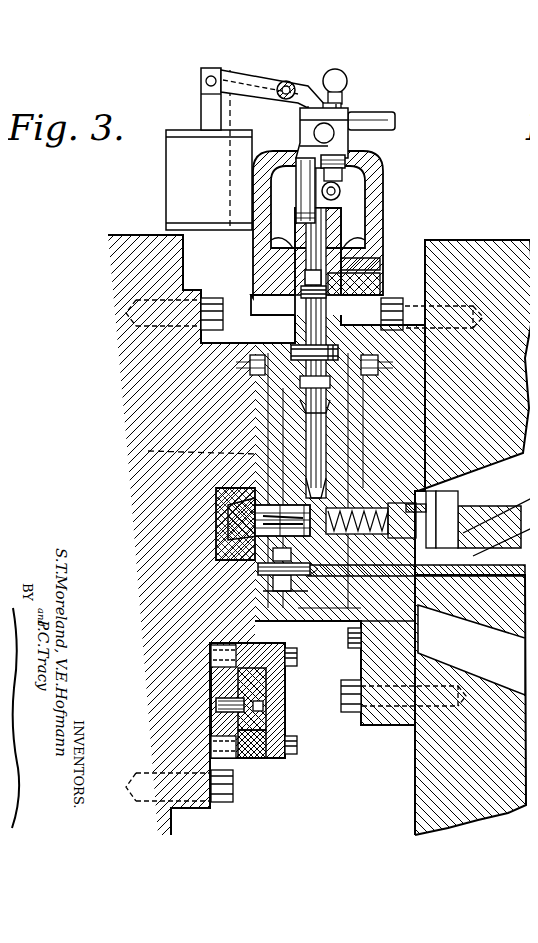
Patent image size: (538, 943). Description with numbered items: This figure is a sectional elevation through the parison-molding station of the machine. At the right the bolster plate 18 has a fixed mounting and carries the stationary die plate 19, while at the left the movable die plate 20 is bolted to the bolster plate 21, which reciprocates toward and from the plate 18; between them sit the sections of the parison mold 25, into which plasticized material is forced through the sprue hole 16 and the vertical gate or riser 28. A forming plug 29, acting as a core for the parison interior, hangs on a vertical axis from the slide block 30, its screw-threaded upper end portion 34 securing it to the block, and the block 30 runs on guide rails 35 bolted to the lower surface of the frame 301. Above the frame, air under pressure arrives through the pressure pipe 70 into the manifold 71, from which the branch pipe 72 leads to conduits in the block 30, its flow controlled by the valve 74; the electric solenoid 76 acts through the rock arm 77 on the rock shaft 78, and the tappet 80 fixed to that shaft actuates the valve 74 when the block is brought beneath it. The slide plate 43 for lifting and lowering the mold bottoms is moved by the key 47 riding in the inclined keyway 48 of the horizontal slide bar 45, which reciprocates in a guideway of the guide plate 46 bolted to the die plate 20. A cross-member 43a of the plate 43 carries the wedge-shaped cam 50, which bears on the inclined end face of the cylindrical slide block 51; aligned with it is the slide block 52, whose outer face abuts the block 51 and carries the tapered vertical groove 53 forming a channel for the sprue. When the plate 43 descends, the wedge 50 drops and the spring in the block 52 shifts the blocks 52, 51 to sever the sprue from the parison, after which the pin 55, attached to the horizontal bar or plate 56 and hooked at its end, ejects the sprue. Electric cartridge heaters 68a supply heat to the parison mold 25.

The sprue hole 16 is at (345, 606).
The bolster plate 18 is at (505, 240).
The stationary die plate 19 is at (390, 717).
The movable die plate 20 is at (185, 800).
The bolster plate 21 is at (170, 251).
The parison mold 25 is at (272, 432).
The vertical gate or riser 28 is at (351, 647).
The forming plug 29 is at (258, 406).
The slide block 30 is at (272, 284).
The screw-threaded upper end portion 34 is at (345, 285).
The guide rails 35 is at (365, 258).
The slide plate 43 is at (228, 683).
The cross-member 43a is at (215, 516).
The horizontal slide bar 45 is at (245, 718).
The guide plate 46 is at (240, 745).
The key 47 is at (238, 698).
The inclined keyway 48 is at (250, 699).
The wedge-shaped cam 50 is at (225, 508).
The cylindrical slide block 51 is at (240, 500).
The slide block 52 is at (372, 492).
The vertical groove 53 is at (360, 507).
The pin 55 is at (265, 574).
The horizontal bar or plate 56 is at (262, 584).
The electric cartridge heaters 68a is at (181, 443).
The pressure pipe 70 is at (376, 112).
The manifold 71 is at (332, 183).
The branch pipe 72 is at (340, 160).
The valve 74 is at (332, 97).
The electric solenoid 76 is at (160, 158).
The rock arm 77 is at (260, 72).
The rock shaft 78 is at (279, 72).
The tappet 80 is at (320, 64).
The frame 301 is at (372, 200).